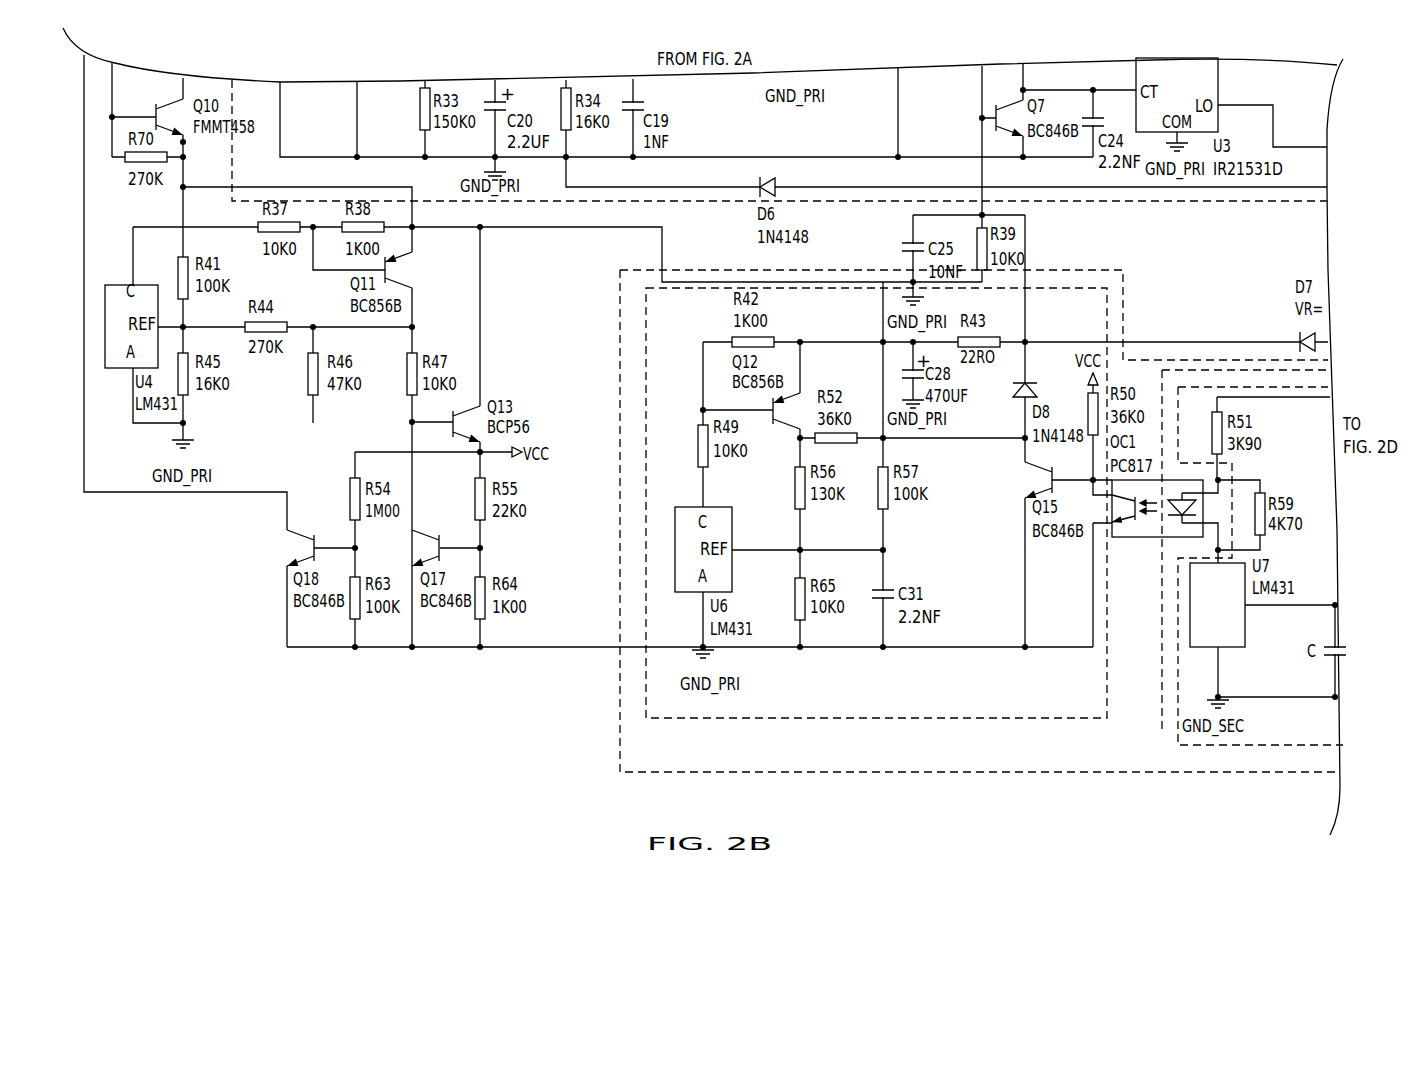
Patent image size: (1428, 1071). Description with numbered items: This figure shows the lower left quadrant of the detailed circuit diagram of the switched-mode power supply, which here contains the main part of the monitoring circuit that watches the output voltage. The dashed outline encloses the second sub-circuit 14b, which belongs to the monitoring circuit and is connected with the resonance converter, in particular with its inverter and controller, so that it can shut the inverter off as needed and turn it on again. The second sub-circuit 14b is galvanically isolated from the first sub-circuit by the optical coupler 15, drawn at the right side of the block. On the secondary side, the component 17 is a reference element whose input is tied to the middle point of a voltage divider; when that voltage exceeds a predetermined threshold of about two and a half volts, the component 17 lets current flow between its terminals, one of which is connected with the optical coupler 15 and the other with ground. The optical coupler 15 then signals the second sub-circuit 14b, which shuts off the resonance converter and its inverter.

The second sub-circuit 14b is at (642, 695).
The optical coupler 15 is at (1147, 525).
The component 17 is at (1190, 613).